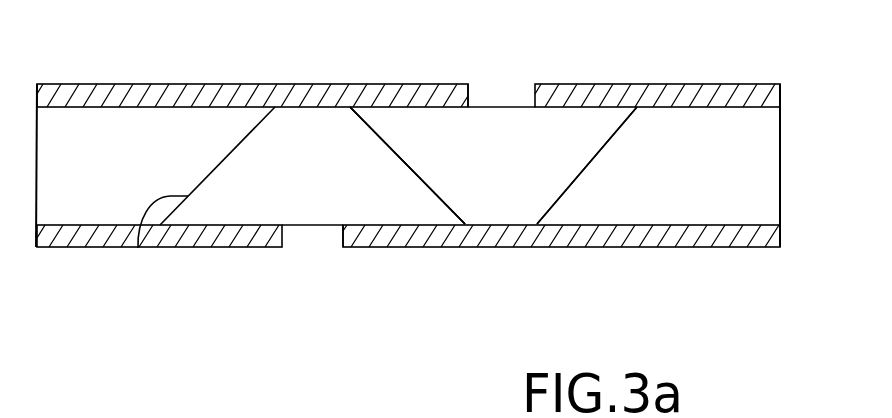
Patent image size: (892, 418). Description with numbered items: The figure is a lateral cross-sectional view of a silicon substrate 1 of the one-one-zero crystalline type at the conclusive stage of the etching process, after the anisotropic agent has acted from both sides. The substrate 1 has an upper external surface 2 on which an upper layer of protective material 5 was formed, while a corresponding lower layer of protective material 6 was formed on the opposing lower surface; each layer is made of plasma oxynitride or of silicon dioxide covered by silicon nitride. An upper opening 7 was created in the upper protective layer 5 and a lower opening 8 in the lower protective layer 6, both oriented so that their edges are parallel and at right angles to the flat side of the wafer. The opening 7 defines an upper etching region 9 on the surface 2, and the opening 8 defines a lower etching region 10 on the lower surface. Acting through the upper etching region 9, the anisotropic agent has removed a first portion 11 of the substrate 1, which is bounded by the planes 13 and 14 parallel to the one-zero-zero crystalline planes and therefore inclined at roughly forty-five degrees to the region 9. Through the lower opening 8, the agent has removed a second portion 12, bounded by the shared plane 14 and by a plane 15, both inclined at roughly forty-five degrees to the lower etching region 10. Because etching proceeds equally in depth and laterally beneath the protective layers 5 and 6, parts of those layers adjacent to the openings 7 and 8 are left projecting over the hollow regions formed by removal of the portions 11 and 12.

The substrate 1 is at (783, 172).
The upper external surface 2 is at (107, 84).
The upper layer of protective material 5 is at (780, 96).
The lower layer of protective material 6 is at (757, 248).
The upper opening 7 is at (472, 88).
The lower opening 8 is at (340, 241).
The upper etching region 9 is at (520, 106).
The lower etching region 10 is at (300, 226).
The first portion 11 is at (500, 178).
The second portion 12 is at (305, 178).
The plane 13 is at (577, 180).
The plane 14 is at (410, 193).
The plane 15 is at (137, 248).